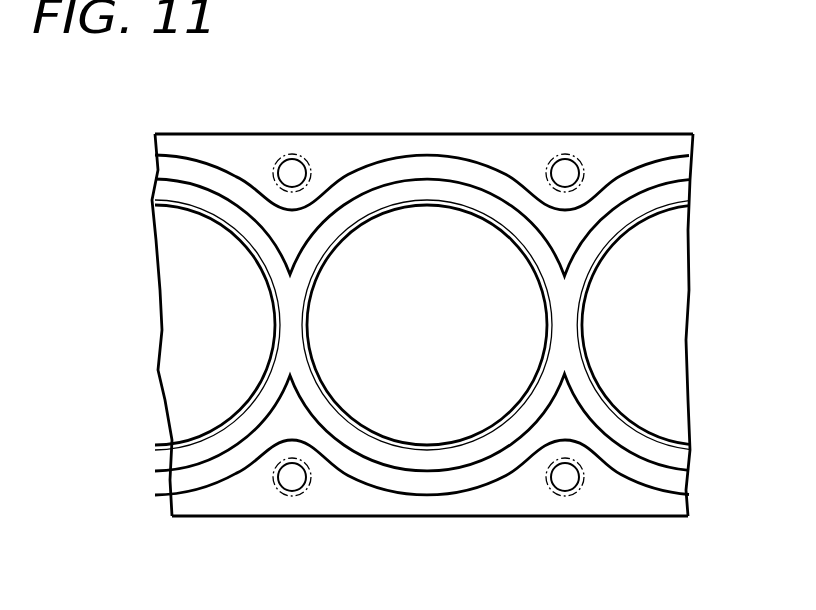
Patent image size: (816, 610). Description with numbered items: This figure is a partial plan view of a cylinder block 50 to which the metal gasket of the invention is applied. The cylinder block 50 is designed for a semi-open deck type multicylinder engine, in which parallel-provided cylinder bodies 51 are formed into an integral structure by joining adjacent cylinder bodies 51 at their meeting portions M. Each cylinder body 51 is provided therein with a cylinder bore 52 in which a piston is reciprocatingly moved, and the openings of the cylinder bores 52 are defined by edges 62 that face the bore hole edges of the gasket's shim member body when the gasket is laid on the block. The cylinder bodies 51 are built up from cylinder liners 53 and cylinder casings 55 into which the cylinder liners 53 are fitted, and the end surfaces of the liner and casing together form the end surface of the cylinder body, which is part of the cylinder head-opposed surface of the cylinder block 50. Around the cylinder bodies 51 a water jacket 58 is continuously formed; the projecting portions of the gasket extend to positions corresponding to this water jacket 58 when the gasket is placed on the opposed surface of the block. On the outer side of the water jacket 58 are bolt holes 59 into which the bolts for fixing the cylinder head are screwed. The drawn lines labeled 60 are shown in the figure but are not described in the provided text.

The cylinder block 50 is at (597, 148).
The cylinder bodies 51 is at (190, 182).
The cylinder bores 52 is at (184, 338).
The cylinder liners 53 is at (187, 208).
The cylinder casings 55 is at (175, 193).
The water jacket 58 is at (220, 182).
The bolt holes 59 is at (292, 158).
The annular groove 60 is at (667, 203).
The bore hole edges 62 is at (207, 435).
The meeting portions M is at (292, 333).